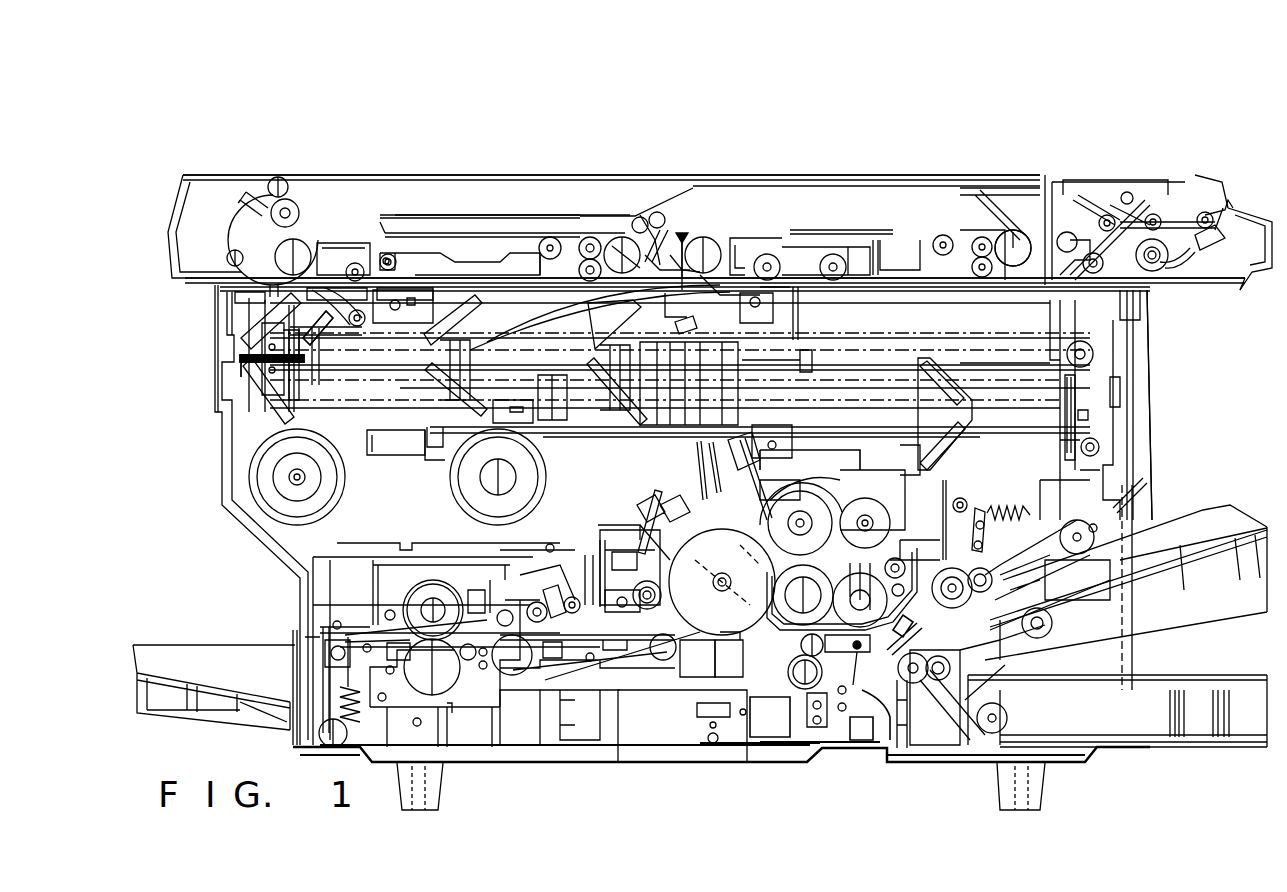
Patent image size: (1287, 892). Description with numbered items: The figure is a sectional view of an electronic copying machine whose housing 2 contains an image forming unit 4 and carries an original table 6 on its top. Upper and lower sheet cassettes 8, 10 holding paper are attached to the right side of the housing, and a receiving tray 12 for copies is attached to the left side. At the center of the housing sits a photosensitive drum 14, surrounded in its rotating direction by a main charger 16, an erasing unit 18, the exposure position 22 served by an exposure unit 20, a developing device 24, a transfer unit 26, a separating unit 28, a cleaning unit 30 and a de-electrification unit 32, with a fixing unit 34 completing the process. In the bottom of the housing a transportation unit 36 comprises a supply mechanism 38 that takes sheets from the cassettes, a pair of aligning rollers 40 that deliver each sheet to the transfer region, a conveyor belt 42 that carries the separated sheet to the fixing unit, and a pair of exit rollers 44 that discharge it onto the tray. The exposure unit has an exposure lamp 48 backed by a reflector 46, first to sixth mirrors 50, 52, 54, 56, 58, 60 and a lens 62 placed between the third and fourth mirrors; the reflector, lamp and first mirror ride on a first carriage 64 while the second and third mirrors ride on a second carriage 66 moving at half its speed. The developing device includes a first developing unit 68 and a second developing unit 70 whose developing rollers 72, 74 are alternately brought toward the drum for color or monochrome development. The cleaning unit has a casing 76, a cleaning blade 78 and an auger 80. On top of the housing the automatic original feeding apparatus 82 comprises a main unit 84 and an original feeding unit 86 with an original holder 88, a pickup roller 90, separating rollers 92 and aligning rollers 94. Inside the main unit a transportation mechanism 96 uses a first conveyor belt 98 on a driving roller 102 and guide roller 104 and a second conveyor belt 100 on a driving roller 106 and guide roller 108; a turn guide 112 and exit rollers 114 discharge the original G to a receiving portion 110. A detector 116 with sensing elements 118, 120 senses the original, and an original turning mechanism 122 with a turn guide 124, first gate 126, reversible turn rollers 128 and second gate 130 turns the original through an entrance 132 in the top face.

The housing 2 is at (1150, 400).
The image forming unit 4 is at (1076, 484).
The original table 6 is at (889, 283).
The upper sheet cassette 8 is at (1225, 540).
The lower sheet cassette 10 is at (1212, 678).
The receiving tray 12 is at (178, 652).
The photosensitive drum 14 is at (693, 617).
The main charger 16 is at (660, 487).
The erasing unit 18 is at (695, 476).
The exposure unit 20 is at (589, 451).
The exposure position 22 is at (683, 565).
The developing device 24 is at (968, 500).
The transfer unit 26 is at (728, 700).
The separating unit 28 is at (698, 658).
The cleaning unit 30 is at (598, 521).
The de-electrification unit 32 is at (645, 512).
The fixing unit 34 is at (418, 686).
The transportation unit 36 is at (522, 699).
The supply mechanism 38 is at (958, 667).
The aligning rollers 40 is at (803, 727).
The conveyor belt 42 is at (530, 600).
The exit rollers 44 is at (330, 637).
The reflector 46 is at (330, 327).
The exposure lamp 48 is at (353, 305).
The first mirror 50 is at (307, 323).
The second mirror 52 is at (267, 328).
The third mirror 54 is at (265, 398).
The fourth mirror 56 is at (958, 392).
The fifth mirror 58 is at (993, 465).
The sixth mirror 60 is at (735, 447).
The lens 62 is at (648, 425).
The first carriage 64 is at (372, 347).
The second carriage 66 is at (240, 363).
The first developing unit 68 is at (915, 540).
The second developing unit 70 is at (1005, 593).
The developing roller 72 is at (802, 500).
The developing roller 74 is at (786, 599).
The casing 76 is at (605, 540).
The cleaning blade 78 is at (622, 607).
The auger 80 is at (661, 592).
The automatic original feeding apparatus 82 is at (804, 168).
The main unit 84 is at (690, 232).
The original feeding unit 86 is at (1160, 167).
The original holder 88 is at (1262, 222).
The pickup roller 90 is at (1208, 237).
The separating rollers 92 is at (1162, 268).
The aligning rollers 94 is at (1138, 300).
The transportation mechanism 96 is at (731, 231).
The first conveyor belt 98 is at (980, 245).
The second conveyor belt 100 is at (551, 245).
The driving roller 102 is at (1016, 248).
The guide roller 104 is at (712, 262).
The driving roller 106 is at (622, 258).
The guide roller 108 is at (300, 250).
The receiving portion 110 is at (403, 218).
The turn guide 112 is at (252, 242).
The exit rollers 114 is at (288, 198).
The detector 116 is at (699, 228).
The sensing element 118 is at (682, 265).
The sensing element 120 is at (812, 353).
The original turning mechanism 122 is at (640, 218).
The turn guide 124 is at (690, 221).
The first gate 126 is at (650, 267).
The turn rollers 128 is at (638, 217).
The second gate 130 is at (656, 212).
The entrance 132 is at (644, 210).
The original G is at (1223, 208).